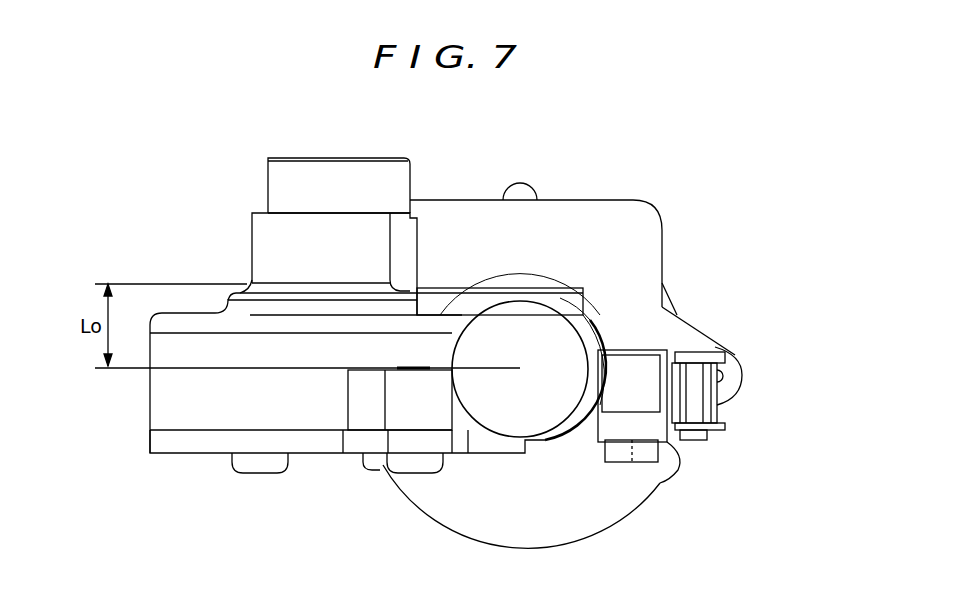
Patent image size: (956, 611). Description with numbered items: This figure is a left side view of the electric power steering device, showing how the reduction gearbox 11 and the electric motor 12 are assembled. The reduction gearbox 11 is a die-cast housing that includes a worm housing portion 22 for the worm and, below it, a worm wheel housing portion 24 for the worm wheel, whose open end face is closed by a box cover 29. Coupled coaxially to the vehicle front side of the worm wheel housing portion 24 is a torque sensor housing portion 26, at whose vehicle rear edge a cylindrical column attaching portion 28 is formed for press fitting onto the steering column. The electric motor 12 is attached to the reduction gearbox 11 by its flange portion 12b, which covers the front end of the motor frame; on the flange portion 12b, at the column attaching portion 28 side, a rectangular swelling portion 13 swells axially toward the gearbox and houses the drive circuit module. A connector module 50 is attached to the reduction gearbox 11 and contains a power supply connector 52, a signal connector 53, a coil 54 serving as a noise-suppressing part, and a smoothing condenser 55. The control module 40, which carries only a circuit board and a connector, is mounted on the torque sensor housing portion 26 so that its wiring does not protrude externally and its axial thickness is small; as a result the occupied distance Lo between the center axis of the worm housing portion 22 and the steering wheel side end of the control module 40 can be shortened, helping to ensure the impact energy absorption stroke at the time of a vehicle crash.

The reduction gearbox 11 is at (323, 460).
The electric motor 12 is at (665, 242).
The flange portion 12b is at (470, 515).
The rectangular swelling portion 13 is at (607, 215).
The worm housing portion 22 is at (537, 415).
The worm wheel housing portion 24 is at (158, 398).
The torque sensor housing portion 26 is at (265, 250).
The column attaching portion 28 is at (283, 195).
The box cover 29 is at (188, 440).
The control module 40 is at (497, 286).
The connector module 50 is at (723, 431).
The power supply connector 52 is at (647, 427).
The signal connector 53 is at (640, 362).
The coil 54 is at (737, 413).
The smoothing condenser 55 is at (620, 453).